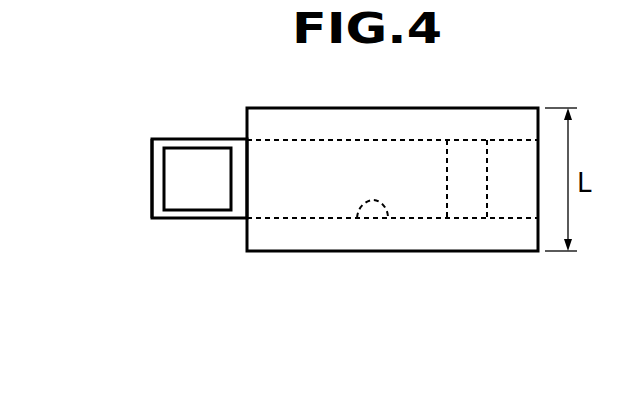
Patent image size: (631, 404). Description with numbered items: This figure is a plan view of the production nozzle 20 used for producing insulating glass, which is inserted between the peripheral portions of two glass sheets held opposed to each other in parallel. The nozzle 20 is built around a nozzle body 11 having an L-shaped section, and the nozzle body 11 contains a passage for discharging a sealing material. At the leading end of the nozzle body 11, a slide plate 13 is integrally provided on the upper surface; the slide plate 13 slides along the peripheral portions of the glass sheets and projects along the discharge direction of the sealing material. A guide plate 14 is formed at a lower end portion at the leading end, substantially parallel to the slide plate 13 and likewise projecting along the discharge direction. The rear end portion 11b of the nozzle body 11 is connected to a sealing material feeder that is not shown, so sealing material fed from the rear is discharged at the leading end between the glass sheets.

The production nozzle 20 is at (293, 242).
The slide plate 13 is at (438, 243).
The guide plate 14 is at (486, 177).
The nozzle body 11 is at (192, 218).
The rear end portion 11b is at (153, 148).